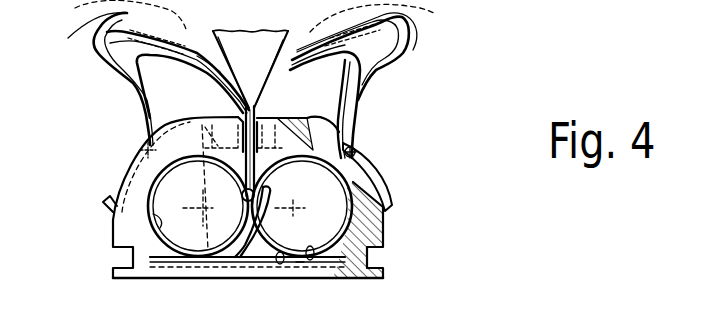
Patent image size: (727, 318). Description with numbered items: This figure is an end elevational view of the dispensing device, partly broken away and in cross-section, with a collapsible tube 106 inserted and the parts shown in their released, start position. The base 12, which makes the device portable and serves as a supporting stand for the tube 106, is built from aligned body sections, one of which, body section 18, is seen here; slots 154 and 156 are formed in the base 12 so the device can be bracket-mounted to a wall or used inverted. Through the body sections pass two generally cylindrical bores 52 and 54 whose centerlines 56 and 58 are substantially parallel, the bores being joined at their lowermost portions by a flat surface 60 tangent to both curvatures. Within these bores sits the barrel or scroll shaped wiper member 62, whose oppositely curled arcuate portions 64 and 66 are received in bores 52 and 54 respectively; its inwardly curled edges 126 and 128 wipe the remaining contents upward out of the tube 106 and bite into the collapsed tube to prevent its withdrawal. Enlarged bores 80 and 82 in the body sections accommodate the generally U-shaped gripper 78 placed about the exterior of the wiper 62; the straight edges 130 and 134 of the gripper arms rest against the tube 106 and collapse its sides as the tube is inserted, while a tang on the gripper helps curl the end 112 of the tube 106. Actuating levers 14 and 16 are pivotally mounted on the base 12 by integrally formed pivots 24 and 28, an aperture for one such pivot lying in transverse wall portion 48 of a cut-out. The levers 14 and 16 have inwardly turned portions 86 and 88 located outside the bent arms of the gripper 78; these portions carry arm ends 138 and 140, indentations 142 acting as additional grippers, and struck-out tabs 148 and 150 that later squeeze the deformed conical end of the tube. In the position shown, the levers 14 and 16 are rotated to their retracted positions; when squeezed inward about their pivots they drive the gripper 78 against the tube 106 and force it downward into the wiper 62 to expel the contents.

The base 12 is at (166, 282).
The actuating lever 14 is at (122, 73).
The actuating lever 16 is at (380, 73).
The body section 18 is at (112, 205).
The pivot 24 is at (128, 163).
The pivot 28 is at (355, 133).
The transverse wall portion 48 is at (357, 173).
The cylindrical bore 52 is at (214, 185).
The cylindrical bore 54 is at (270, 178).
The centerline 56 is at (218, 262).
The centerline 58 is at (300, 270).
The flat surface 60 is at (281, 268).
The wiper member 62 is at (204, 270).
The curled arcuate portion 64 is at (232, 183).
The curled arcuate portion 66 is at (262, 160).
The gripper 78 is at (345, 84).
The enlarged bore 80 is at (222, 120).
The enlarged bore 82 is at (340, 128).
The inwardly turned portion 86 is at (118, 60).
The inwardly turned portion 88 is at (393, 58).
The collapsible tube 106 is at (290, 38).
The tube end 112 is at (240, 195).
The inwardly curled edge 126 is at (242, 192).
The inwardly curled edge 128 is at (258, 195).
The straight edge 130 is at (226, 96).
The straight edge 134 is at (270, 100).
The arm end 138 is at (201, 56).
The arm end 140 is at (276, 62).
The indentations 142 is at (85, 9).
The tab portion 148 is at (68, 38).
The tab portion 150 is at (413, 25).
The slot 154 is at (123, 256).
The slot 156 is at (383, 258).